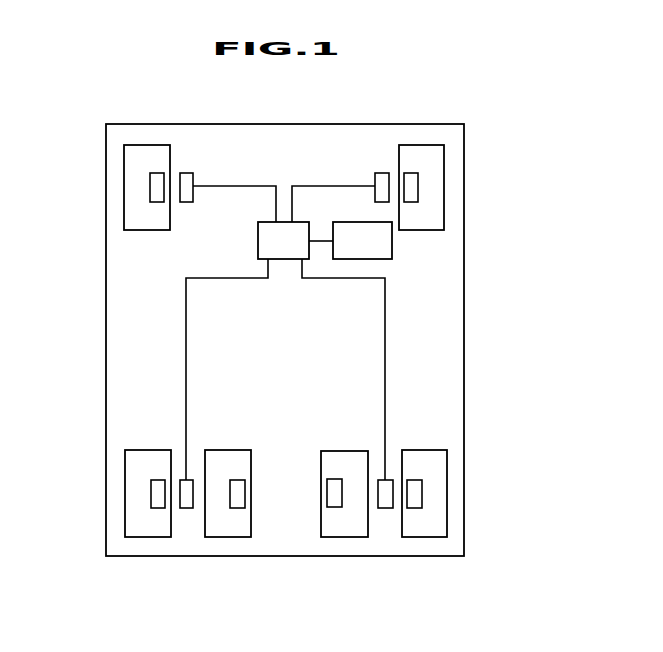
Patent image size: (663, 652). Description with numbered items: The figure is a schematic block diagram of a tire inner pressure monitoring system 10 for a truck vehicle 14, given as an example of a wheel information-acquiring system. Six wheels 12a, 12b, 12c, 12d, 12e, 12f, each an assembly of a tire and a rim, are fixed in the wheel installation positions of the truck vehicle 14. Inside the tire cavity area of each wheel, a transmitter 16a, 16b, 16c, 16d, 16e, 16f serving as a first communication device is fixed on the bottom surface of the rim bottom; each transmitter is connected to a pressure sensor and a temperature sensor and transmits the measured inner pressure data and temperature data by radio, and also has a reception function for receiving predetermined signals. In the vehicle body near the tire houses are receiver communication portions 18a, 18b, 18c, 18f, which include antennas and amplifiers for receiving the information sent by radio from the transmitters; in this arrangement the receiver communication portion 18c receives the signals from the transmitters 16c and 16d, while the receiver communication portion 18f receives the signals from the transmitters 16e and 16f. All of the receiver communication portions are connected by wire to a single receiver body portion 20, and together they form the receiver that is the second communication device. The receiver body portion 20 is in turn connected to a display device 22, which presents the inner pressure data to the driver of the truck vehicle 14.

The tire inner pressure monitoring system 10 is at (542, 144).
The truck vehicle 14 is at (464, 362).
The wheel 12a is at (133, 145).
The wheel 12b is at (437, 145).
The wheel 12c is at (125, 463).
The wheel 12d is at (208, 537).
The wheel 12e is at (360, 537).
The wheel 12f is at (448, 462).
The transmitter 16a is at (150, 187).
The transmitter 16b is at (418, 186).
The transmitter 16c is at (151, 494).
The transmitter 16d is at (237, 508).
The transmitter 16e is at (334, 508).
The transmitter 16f is at (422, 493).
The receiver communication portion 18a is at (185, 173).
The receiver communication portion 18b is at (382, 173).
The receiver communication portion 18c is at (186, 509).
The receiver communication portion 18f is at (385, 509).
The receiver body portion 20 is at (258, 243).
The display device 22 is at (392, 246).